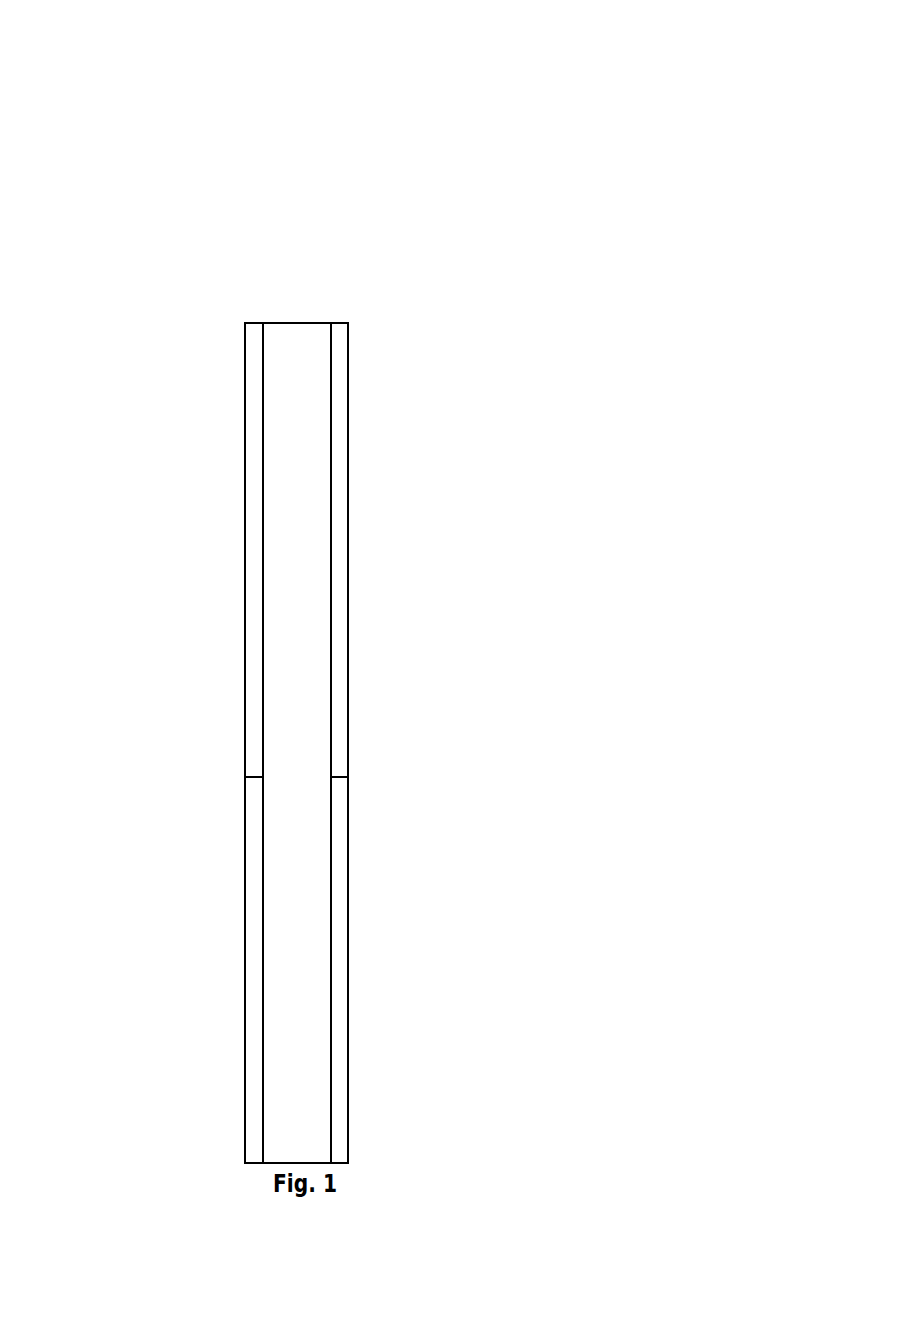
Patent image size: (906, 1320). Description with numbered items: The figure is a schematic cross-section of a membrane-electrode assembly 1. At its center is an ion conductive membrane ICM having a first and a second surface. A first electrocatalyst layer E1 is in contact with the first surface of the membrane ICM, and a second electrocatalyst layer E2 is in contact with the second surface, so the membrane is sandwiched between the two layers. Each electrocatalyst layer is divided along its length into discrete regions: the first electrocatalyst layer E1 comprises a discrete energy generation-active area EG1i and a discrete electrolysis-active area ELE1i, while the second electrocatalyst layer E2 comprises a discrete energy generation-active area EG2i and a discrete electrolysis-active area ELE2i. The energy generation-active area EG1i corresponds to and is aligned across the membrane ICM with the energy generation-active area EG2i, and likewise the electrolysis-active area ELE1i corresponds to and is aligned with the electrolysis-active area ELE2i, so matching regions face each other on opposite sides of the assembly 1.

The membrane-electrode assembly 1 is at (483, 102).
The ion conductive membrane ICM is at (296, 318).
The first electrocatalyst layer E1 is at (251, 319).
The second electrocatalyst layer E2 is at (340, 319).
The discrete energy generation-active area EG1i is at (241, 740).
The discrete energy generation-active area EG2i is at (352, 740).
The discrete electrolysis-active area ELE1i is at (226, 1010).
The discrete electrolysis-active area ELE2i is at (369, 995).